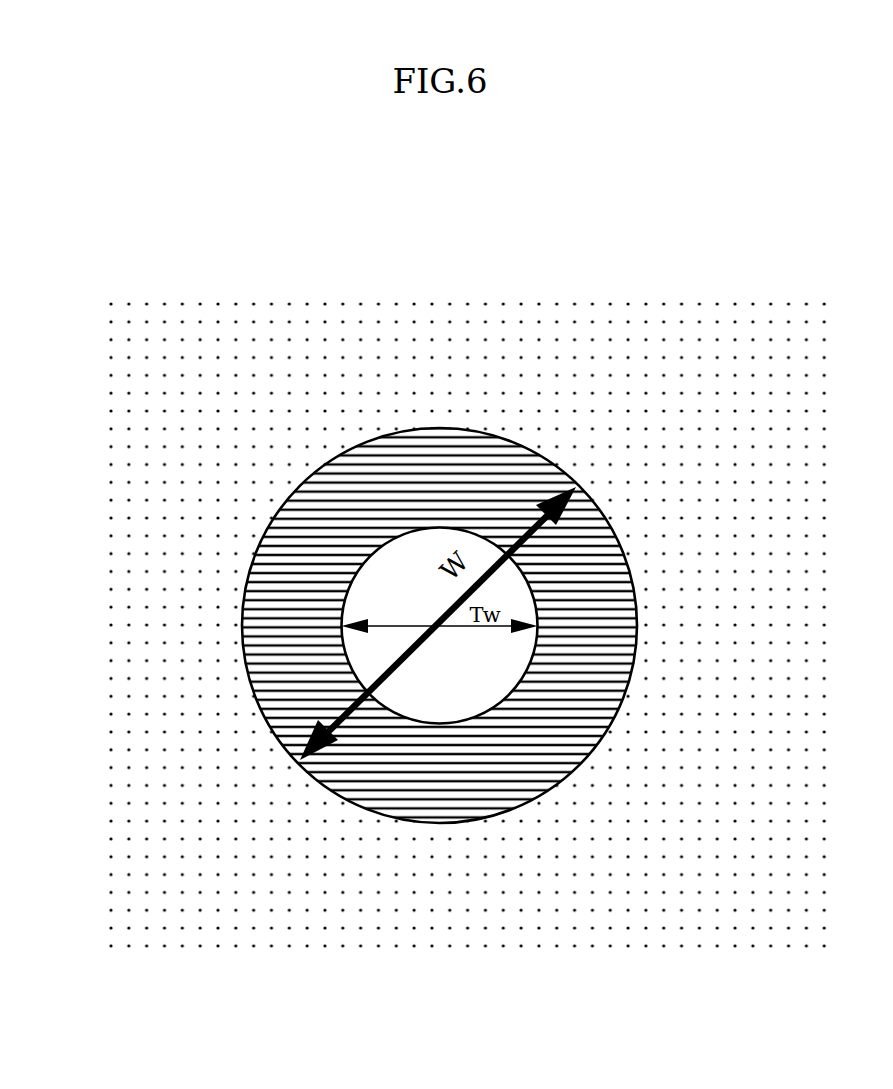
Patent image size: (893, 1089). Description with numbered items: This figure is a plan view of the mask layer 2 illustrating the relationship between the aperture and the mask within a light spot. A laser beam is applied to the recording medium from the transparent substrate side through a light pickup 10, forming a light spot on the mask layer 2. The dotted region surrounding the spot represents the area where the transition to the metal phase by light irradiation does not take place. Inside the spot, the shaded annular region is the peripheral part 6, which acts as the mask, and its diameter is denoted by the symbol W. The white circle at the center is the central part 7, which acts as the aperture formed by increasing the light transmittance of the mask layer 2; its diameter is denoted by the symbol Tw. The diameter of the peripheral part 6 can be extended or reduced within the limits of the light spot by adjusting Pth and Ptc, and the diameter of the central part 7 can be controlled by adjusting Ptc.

The mask layer 2 is at (523, 376).
The peripheral part 6 is at (330, 724).
The central part 7 is at (285, 525).
The light pickup 10 is at (403, 575).